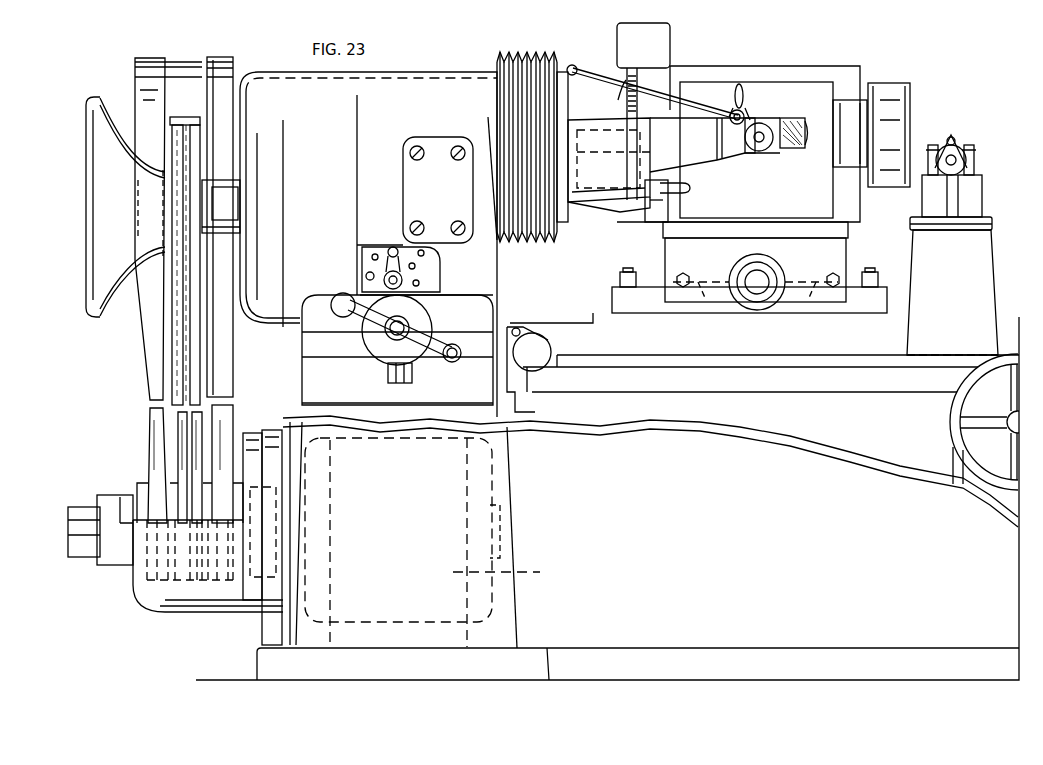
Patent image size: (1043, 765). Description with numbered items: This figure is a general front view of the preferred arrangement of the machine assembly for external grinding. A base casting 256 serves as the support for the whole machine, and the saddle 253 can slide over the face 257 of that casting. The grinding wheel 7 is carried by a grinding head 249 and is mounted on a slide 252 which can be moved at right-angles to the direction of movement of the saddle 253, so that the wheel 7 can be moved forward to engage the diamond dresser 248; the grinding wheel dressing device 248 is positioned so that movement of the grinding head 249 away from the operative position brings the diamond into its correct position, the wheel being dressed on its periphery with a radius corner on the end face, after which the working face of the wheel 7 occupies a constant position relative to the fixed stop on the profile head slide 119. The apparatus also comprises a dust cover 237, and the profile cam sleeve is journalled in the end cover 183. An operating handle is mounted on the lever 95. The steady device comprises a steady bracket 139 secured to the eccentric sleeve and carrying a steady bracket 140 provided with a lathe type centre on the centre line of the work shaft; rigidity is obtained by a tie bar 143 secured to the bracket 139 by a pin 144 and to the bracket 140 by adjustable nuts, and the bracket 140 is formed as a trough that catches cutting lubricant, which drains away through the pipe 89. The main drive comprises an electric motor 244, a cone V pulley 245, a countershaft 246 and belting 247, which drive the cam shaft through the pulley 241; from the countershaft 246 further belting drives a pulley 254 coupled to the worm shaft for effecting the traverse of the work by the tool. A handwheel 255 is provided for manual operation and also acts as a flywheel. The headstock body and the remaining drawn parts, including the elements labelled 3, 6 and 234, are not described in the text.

The headstock 3 is at (472, 97).
The end cover 183 is at (262, 72).
The lever 95 is at (407, 259).
The profile head slide 119 is at (306, 341).
The hand lever 234 is at (366, 337).
The dust cover 237 is at (540, 54).
The steady bracket 139 is at (586, 195).
The flange 6 is at (606, 196).
The steady bracket 140 is at (700, 160).
The tie bar 143 is at (698, 103).
The pin 144 is at (574, 65).
The grinding wheel 7 is at (640, 53).
The pipe 89 is at (658, 203).
The grinding head 249 is at (797, 98).
The slide 252 is at (831, 264).
The face 257 is at (860, 358).
The saddle 253 is at (890, 327).
The grinding wheel dressing device 248 is at (960, 147).
The base casting 256 is at (748, 540).
The electric motor 244 is at (500, 575).
The cone V pulley 245 is at (262, 624).
The countershaft 246 is at (90, 512).
The belting 247 is at (180, 386).
The pulley 241 is at (173, 287).
The pulley 254 is at (137, 75).
The handwheel 255 is at (90, 262).